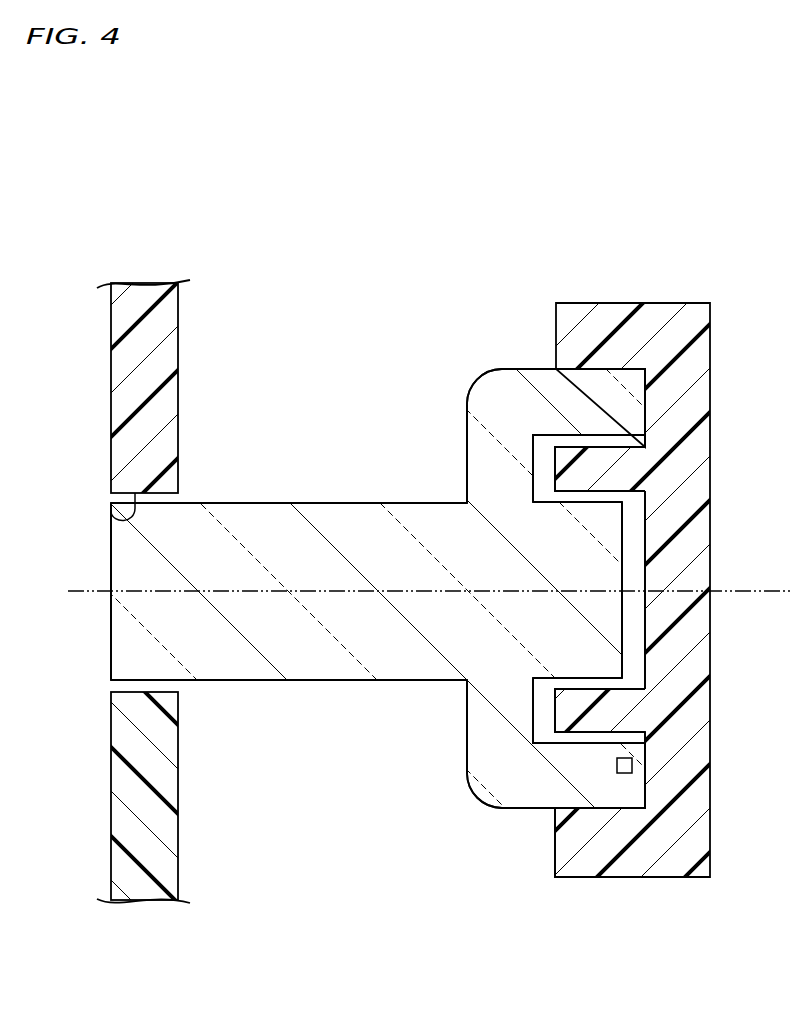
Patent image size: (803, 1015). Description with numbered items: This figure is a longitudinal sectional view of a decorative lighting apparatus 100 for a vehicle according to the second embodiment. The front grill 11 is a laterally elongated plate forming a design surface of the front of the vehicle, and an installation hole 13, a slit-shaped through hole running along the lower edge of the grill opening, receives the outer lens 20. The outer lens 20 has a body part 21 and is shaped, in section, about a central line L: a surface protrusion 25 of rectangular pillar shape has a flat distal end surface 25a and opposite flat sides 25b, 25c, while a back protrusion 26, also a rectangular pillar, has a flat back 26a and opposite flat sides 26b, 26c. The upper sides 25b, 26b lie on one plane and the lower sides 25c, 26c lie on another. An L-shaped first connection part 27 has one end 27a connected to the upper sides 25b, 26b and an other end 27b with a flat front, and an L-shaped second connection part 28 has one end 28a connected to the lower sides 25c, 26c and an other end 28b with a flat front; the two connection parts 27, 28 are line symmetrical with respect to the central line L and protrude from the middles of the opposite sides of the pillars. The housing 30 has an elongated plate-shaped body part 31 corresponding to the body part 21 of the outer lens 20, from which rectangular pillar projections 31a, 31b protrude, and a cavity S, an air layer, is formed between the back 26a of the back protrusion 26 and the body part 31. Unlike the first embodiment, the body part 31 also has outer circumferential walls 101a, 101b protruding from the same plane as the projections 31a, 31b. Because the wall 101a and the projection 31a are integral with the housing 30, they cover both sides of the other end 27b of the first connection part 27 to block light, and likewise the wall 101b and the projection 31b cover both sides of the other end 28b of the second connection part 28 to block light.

The decorative lighting apparatus for a vehicle 100 is at (769, 125).
The front grill 11 is at (110, 366).
The installation hole 13 is at (111, 522).
The outer lens 20 is at (352, 507).
The body part 21 is at (308, 435).
The surface protrusion 25 is at (253, 503).
The surface 25a is at (107, 623).
The side 25b is at (324, 500).
The side 25c is at (328, 684).
The back protrusion 26 is at (635, 589).
The back 26a is at (630, 602).
The side 26b is at (565, 440).
The side 26c is at (588, 686).
The first connection part 27 is at (480, 392).
The one end 27a is at (464, 491).
The other end 27b is at (651, 398).
The second connection part 28 is at (478, 796).
The one end 28a is at (460, 691).
The other end 28b is at (652, 776).
The housing 30 is at (407, 593).
The body part 31 is at (710, 408).
The projection 31a is at (583, 494).
The projection 31b is at (603, 735).
The outer circumferential wall 101a is at (584, 303).
The outer circumferential wall 101b is at (587, 878).
The central line L is at (417, 592).
The cavity S is at (645, 550).